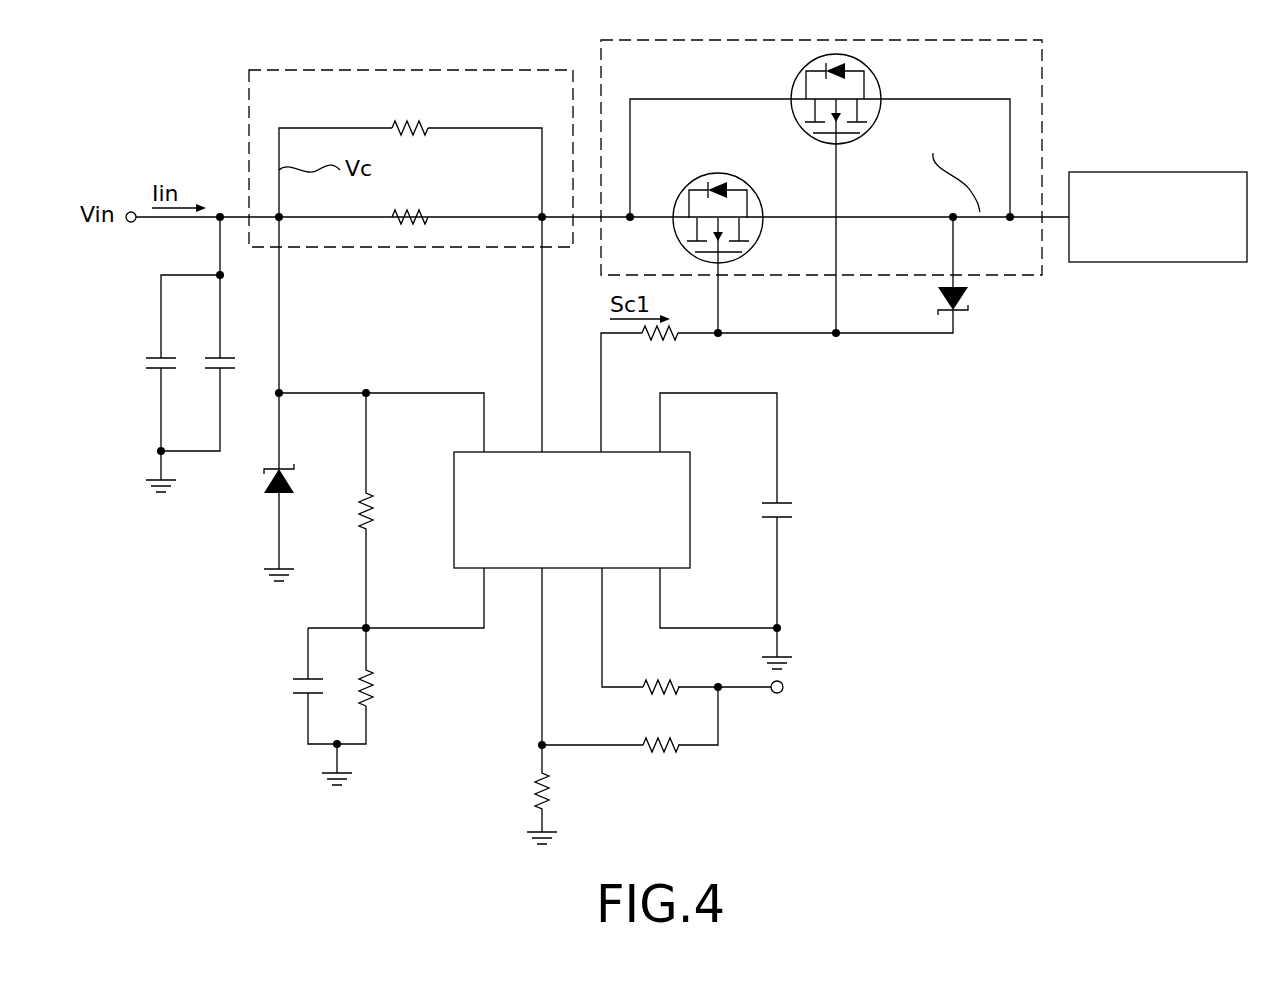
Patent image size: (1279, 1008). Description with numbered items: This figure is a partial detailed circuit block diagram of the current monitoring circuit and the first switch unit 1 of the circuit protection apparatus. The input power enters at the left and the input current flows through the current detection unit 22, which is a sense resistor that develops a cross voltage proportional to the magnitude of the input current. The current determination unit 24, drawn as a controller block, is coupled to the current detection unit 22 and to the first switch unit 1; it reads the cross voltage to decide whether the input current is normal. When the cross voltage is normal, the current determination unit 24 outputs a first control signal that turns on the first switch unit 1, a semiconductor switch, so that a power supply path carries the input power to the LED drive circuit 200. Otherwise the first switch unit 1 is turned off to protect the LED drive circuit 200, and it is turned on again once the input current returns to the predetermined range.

The first switch unit 1 is at (822, 43).
The current detection unit 22 is at (412, 80).
The current determination unit 24 is at (672, 457).
The LED drive circuit 200 is at (1158, 180).